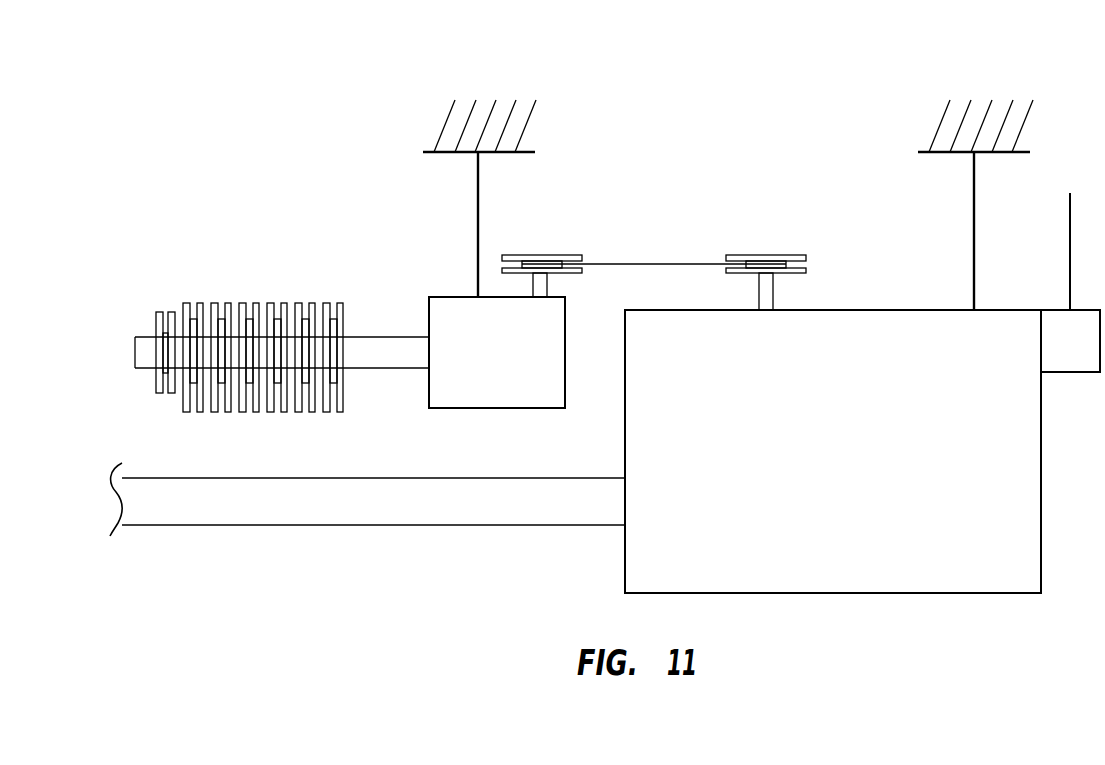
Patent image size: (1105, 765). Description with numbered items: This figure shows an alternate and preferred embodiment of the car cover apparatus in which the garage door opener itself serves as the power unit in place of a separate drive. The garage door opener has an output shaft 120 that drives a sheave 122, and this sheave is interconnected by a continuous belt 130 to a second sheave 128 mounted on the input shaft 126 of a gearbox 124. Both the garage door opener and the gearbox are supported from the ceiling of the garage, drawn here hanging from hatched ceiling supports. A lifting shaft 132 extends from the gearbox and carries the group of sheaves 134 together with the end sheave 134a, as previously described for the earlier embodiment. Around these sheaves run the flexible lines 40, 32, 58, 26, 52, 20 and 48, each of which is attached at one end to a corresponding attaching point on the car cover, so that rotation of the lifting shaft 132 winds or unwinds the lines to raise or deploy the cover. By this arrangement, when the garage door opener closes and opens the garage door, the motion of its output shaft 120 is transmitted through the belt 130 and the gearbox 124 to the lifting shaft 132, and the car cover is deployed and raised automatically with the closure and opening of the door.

The output shaft 120 is at (773, 292).
The sheave 122 is at (770, 255).
The gearbox 124 is at (453, 297).
The input shaft 126 is at (550, 283).
The sheave 128 is at (533, 255).
The continuous belt 130 is at (642, 264).
The lifting shaft 132 is at (362, 337).
The sheaves 134 is at (259, 352).
The sheave 134a is at (155, 380).
The flexible line 40 is at (167, 242).
The flexible line 32 is at (194, 242).
The flexible line 58 is at (222, 242).
The flexible line 26 is at (250, 242).
The flexible line 52 is at (278, 242).
The flexible line 20 is at (306, 242).
The flexible line 48 is at (334, 242).